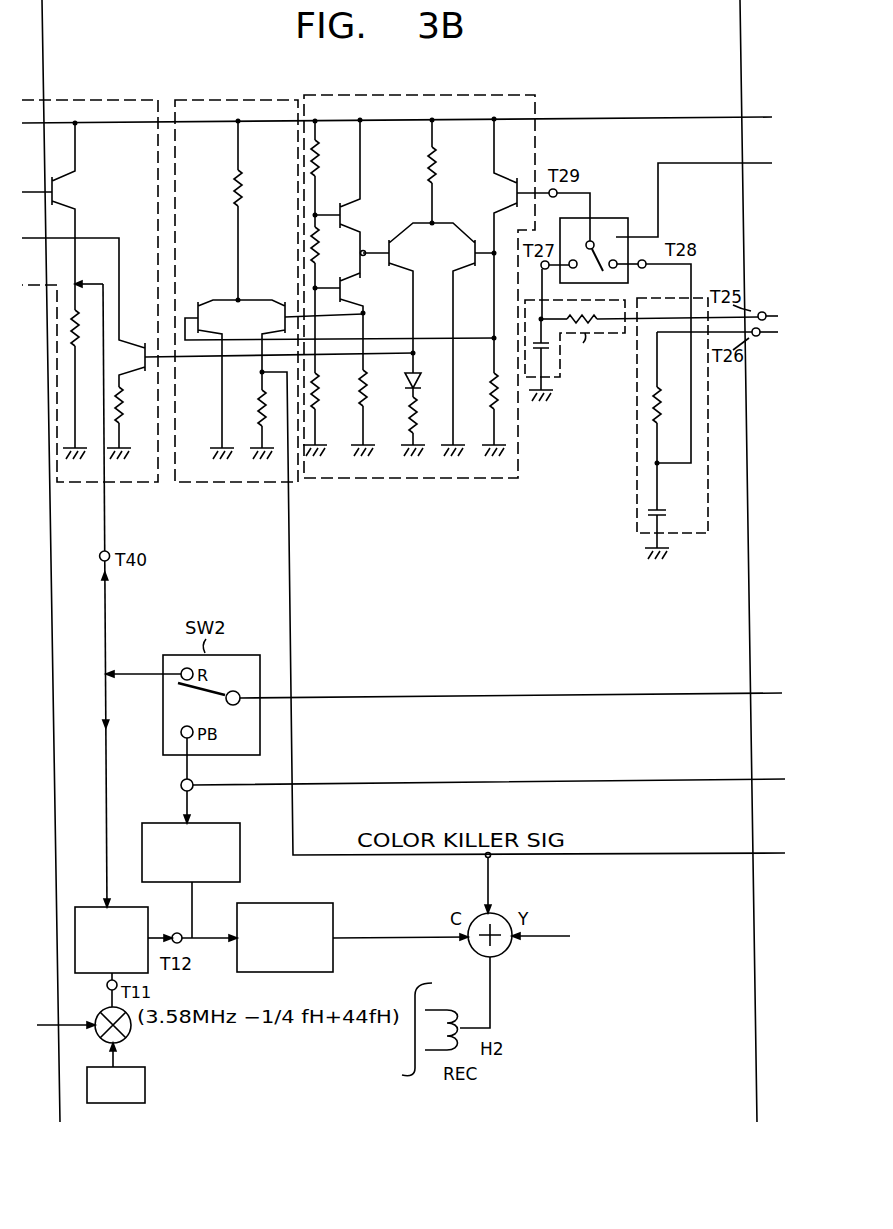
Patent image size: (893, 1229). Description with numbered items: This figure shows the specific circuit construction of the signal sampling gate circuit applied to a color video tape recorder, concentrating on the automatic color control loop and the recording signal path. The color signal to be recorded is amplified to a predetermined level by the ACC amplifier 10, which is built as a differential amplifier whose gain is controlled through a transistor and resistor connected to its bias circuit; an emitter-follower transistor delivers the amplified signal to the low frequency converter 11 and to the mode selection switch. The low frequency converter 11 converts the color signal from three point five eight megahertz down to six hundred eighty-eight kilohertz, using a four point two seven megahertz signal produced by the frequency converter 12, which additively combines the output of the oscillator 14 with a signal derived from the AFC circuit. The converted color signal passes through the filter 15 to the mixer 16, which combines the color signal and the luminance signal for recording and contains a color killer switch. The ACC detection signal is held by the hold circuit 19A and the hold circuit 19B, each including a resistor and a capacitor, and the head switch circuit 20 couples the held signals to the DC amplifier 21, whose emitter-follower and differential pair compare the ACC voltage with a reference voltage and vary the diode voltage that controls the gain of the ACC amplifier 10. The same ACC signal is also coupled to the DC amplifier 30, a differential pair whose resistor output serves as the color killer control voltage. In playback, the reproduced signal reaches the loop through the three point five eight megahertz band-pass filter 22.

The ACC amplifier 10 is at (91, 96).
The DC amplifier 30 is at (219, 96).
The DC amplifier 21 is at (408, 92).
The head switch circuit 20 is at (606, 217).
The hold circuit 19A is at (552, 378).
The hold circuit 19B is at (636, 465).
The 3.58 MHz band-pass filter 22 is at (224, 823).
The low frequency converter 11 is at (92, 905).
The filter 15 is at (296, 905).
The mixer 16 is at (510, 960).
The frequency converter 12 is at (95, 1013).
The oscillator 14 is at (104, 1048).